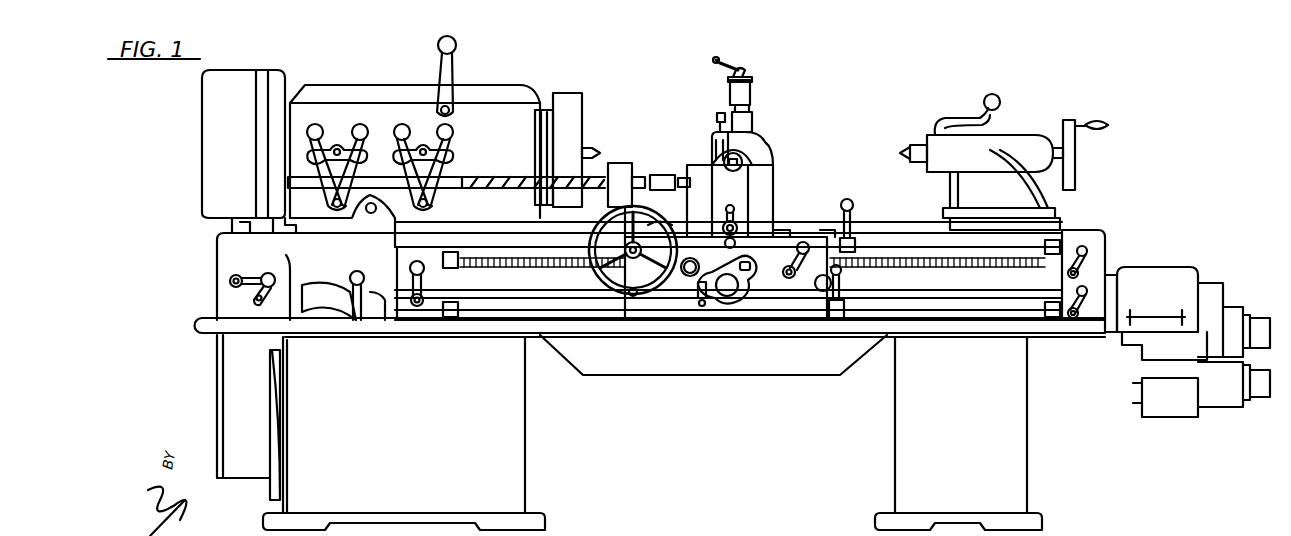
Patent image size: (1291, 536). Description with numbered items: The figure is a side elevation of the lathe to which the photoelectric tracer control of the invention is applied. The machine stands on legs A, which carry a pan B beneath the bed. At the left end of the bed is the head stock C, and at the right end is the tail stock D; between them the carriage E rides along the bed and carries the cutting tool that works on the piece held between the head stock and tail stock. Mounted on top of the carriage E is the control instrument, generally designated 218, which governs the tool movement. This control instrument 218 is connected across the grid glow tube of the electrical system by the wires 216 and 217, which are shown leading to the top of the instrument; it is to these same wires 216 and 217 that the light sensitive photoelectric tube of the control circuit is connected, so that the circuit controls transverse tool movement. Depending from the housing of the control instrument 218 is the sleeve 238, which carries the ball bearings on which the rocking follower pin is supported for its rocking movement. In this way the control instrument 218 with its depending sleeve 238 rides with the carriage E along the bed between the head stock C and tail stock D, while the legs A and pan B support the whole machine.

The legs A is at (470, 445).
The pan B is at (688, 362).
The head stock C is at (490, 130).
The tail stock D is at (985, 150).
The carriage E is at (770, 192).
The wire 216 is at (720, 58).
The wire 217 is at (725, 63).
The control instrument 218 is at (755, 93).
The depending sleeve 238 is at (752, 126).